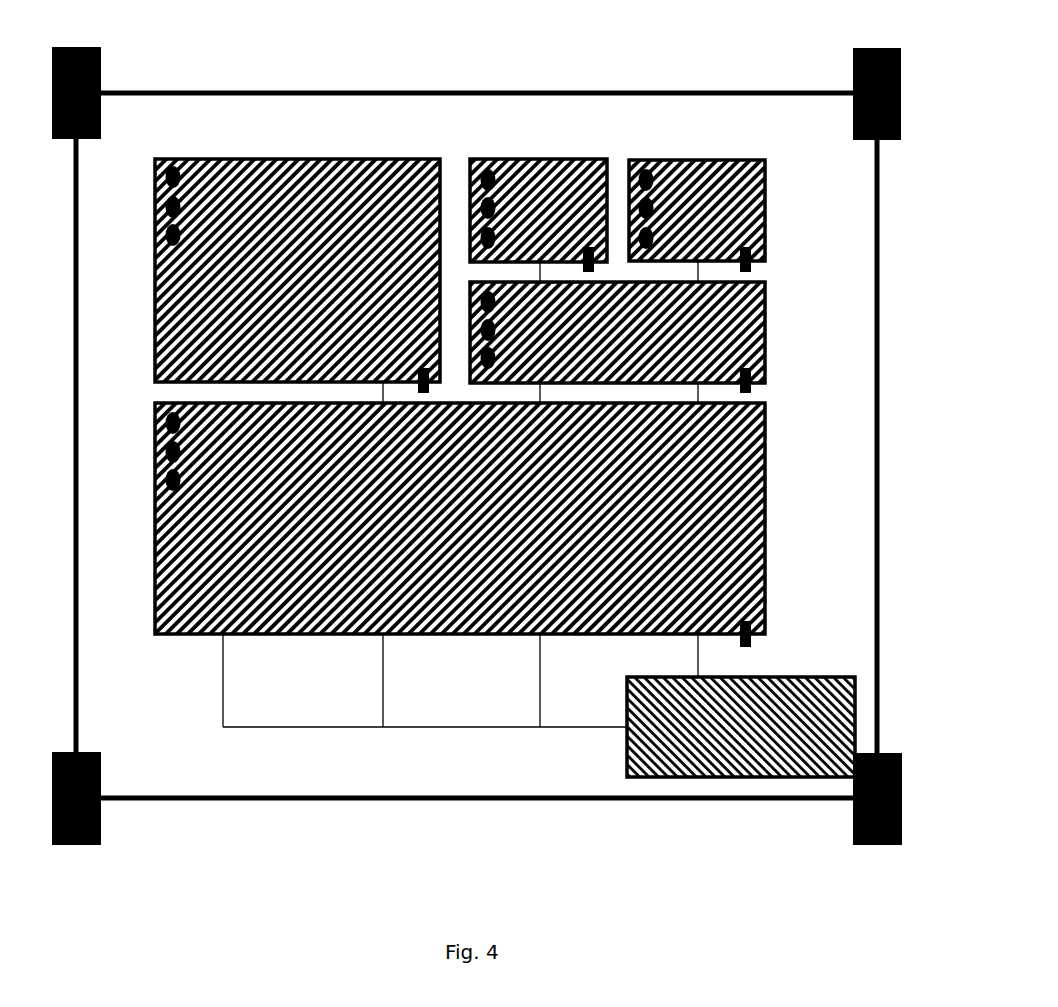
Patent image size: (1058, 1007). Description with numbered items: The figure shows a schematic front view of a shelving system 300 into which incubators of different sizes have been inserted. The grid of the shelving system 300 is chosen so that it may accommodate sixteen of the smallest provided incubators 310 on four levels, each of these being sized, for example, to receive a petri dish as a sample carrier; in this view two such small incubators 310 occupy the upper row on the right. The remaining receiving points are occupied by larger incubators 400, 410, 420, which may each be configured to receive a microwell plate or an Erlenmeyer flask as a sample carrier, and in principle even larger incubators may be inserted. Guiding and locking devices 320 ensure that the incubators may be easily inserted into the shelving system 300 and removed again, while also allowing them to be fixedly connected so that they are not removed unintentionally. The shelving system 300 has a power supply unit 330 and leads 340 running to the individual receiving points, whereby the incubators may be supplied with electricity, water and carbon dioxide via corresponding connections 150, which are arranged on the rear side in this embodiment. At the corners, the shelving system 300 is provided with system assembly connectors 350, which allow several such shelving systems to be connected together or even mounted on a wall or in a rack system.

The shelving system 300 is at (412, 83).
The incubator 310 is at (667, 157).
The guiding and locking device 320 is at (757, 273).
The power supply unit 330 is at (781, 782).
The lead 340 is at (530, 733).
The system assembly connector 350 is at (102, 833).
The incubator 400 is at (773, 375).
The incubator 410 is at (148, 261).
The incubator 420 is at (149, 588).
The connection 150 is at (155, 437).